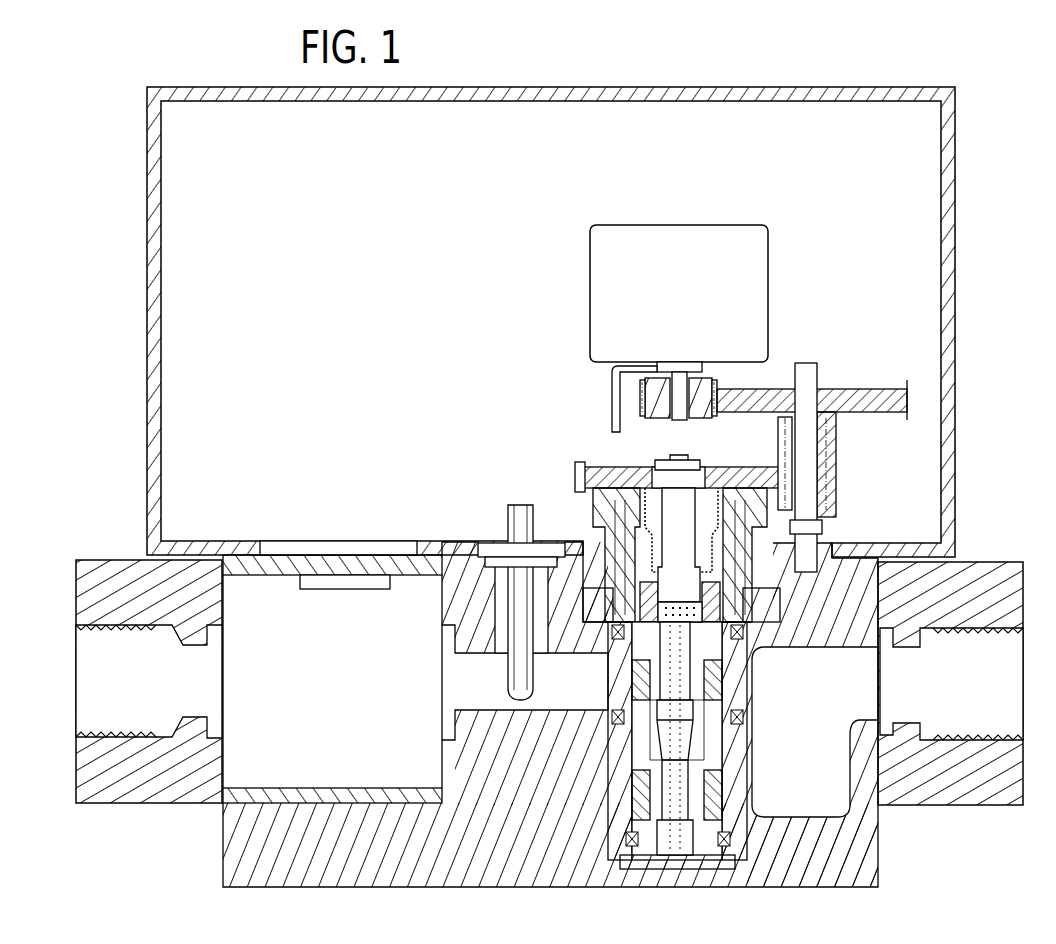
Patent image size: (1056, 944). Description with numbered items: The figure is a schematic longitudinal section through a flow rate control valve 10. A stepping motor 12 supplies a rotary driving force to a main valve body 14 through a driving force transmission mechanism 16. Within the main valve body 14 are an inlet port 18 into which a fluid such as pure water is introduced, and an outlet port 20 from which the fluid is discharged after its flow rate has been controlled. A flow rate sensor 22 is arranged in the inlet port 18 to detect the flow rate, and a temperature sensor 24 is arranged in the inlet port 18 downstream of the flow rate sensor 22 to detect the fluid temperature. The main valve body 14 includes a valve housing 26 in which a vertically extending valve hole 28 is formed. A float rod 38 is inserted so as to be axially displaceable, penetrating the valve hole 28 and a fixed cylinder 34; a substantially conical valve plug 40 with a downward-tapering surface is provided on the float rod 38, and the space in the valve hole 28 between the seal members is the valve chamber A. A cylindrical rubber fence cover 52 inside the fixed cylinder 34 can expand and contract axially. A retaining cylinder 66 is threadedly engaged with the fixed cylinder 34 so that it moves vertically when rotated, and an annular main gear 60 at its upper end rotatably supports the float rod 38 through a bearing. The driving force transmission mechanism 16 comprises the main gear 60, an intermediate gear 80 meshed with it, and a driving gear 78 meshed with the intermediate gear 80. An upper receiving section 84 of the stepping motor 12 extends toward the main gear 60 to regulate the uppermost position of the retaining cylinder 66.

The flow rate control valve 10 is at (851, 66).
The stepping motor 12 is at (612, 285).
The main valve body 14 is at (540, 466).
The driving force transmission mechanism 16 is at (846, 370).
The inlet port 18 is at (132, 700).
The outlet port 20 is at (978, 697).
The flow rate sensor 22 is at (324, 586).
The temperature sensor 24 is at (508, 678).
The valve housing 26 is at (812, 868).
The valve hole 28 is at (697, 770).
The fixed cylinder 34 is at (762, 533).
The float rod 38 is at (692, 678).
The valve plug 40 is at (685, 738).
The fence cover 52 is at (607, 530).
The main gear 60 is at (752, 470).
The retaining cylinder 66 is at (590, 513).
The driving gear 78 is at (672, 420).
The intermediate gear 80 is at (876, 413).
The upper receiving section 84 is at (612, 403).
The valve chamber A is at (718, 698).